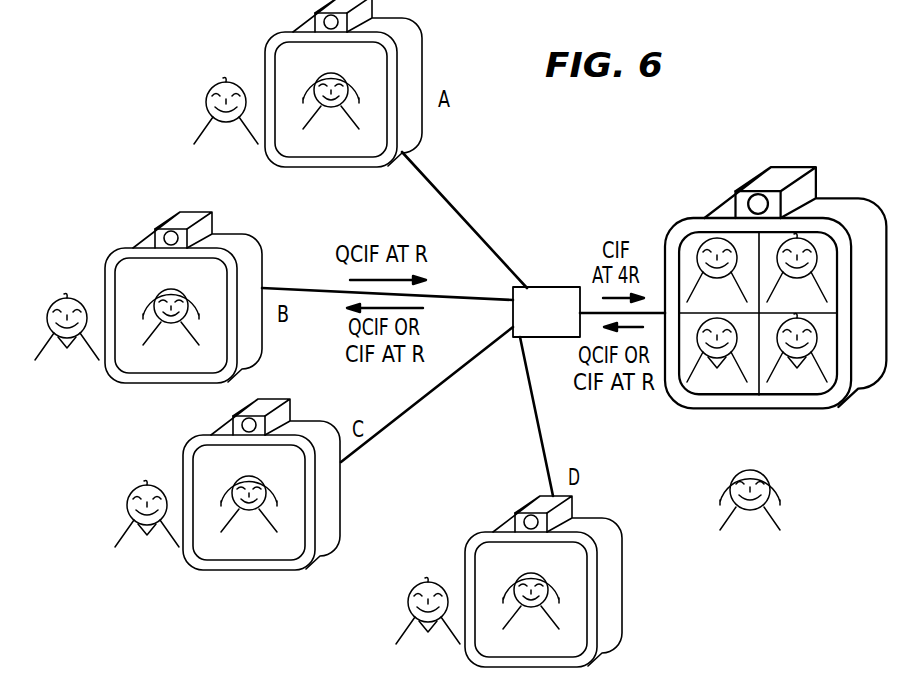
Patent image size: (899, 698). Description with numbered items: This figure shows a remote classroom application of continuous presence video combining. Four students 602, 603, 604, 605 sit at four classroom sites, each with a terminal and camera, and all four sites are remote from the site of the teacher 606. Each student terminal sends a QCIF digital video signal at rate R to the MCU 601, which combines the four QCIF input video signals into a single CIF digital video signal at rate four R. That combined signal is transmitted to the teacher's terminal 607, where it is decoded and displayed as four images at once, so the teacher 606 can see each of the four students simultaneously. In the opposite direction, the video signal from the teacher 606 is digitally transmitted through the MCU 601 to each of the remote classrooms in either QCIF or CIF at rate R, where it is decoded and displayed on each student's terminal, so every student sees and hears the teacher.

The MCU 601 is at (530, 286).
The student 602 is at (204, 93).
The student 603 is at (48, 300).
The student 604 is at (123, 497).
The student 605 is at (406, 594).
The teacher 606 is at (779, 473).
The teacher's terminal 607 is at (797, 173).